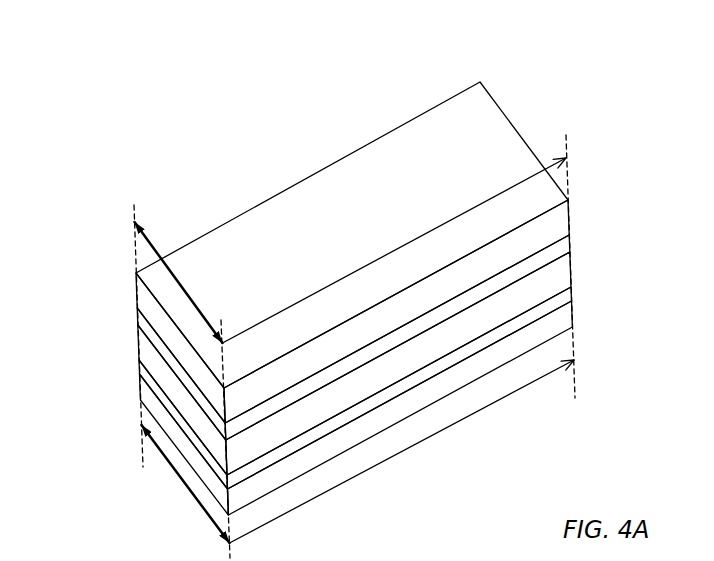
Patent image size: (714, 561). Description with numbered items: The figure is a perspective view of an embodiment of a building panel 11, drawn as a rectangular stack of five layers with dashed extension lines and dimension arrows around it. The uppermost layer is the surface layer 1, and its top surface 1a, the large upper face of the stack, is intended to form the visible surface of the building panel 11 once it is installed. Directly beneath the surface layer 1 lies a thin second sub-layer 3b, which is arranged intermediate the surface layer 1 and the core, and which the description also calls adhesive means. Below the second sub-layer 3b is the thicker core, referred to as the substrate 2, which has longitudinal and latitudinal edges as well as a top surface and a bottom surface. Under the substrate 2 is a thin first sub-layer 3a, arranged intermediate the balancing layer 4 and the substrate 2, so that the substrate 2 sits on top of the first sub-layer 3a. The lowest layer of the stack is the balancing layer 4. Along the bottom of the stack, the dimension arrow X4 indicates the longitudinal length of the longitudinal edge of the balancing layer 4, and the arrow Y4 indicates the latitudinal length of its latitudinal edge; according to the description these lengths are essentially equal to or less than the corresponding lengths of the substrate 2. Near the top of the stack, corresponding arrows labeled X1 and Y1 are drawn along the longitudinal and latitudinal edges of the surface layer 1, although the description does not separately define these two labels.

The building panel 11 is at (323, 130).
The top surface 1a is at (442, 138).
The surface layer 1 is at (542, 233).
The substrate 2 is at (562, 280).
The first sub-layer 3a is at (138, 372).
The second sub-layer 3b is at (137, 313).
The balancing layer 4 is at (565, 325).
The length direction dimension X1 is at (522, 178).
The width direction dimension Y1 is at (170, 267).
The longitudinal length of balancing layer X4 is at (512, 397).
The latitudinal length of balancing layer Y4 is at (190, 503).